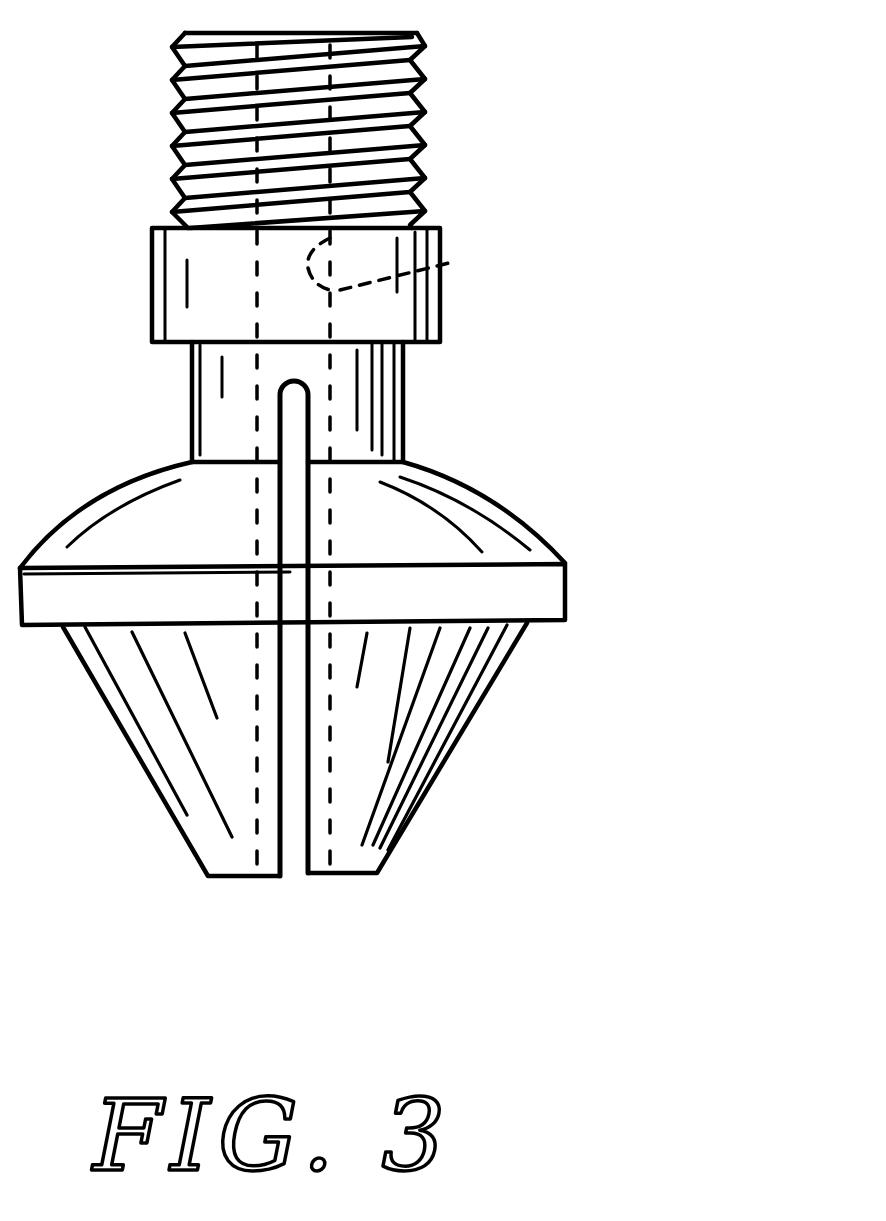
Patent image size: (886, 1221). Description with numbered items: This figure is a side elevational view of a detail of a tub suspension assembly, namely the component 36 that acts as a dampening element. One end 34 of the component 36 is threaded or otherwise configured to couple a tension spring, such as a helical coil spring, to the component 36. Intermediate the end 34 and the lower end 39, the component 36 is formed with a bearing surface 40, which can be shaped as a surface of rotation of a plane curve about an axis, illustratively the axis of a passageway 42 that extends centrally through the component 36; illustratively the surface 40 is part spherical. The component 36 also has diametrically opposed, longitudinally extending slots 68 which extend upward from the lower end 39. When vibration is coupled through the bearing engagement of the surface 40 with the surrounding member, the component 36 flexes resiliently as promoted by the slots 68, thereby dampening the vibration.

The end 34 is at (420, 100).
The passageway 42 is at (447, 260).
The bearing surface 40 is at (452, 505).
The component 36 is at (668, 524).
The lower end 39 is at (215, 902).
The slots 68 is at (310, 668).